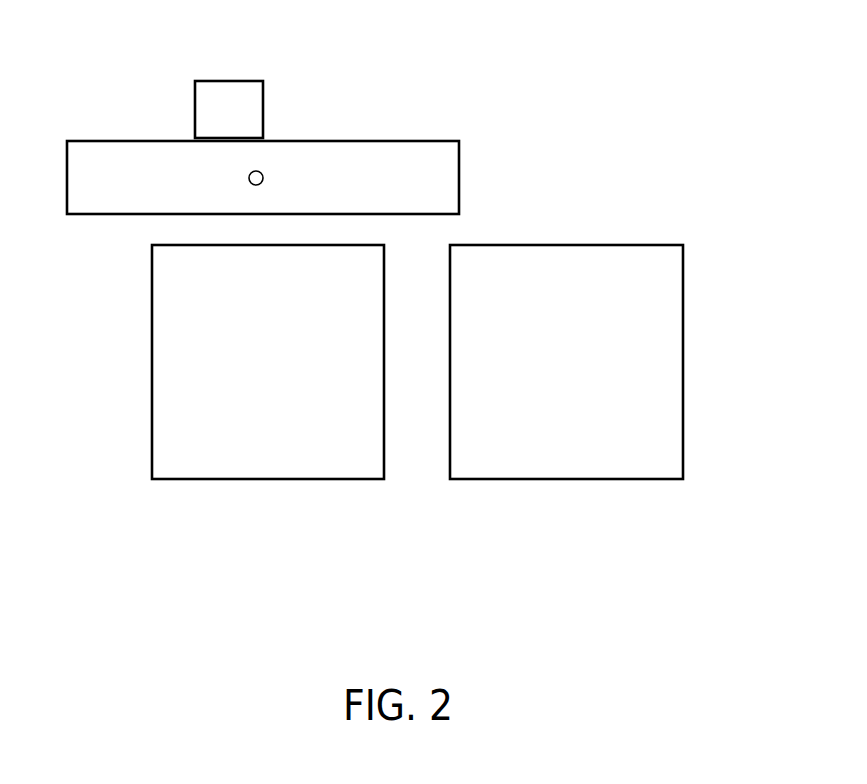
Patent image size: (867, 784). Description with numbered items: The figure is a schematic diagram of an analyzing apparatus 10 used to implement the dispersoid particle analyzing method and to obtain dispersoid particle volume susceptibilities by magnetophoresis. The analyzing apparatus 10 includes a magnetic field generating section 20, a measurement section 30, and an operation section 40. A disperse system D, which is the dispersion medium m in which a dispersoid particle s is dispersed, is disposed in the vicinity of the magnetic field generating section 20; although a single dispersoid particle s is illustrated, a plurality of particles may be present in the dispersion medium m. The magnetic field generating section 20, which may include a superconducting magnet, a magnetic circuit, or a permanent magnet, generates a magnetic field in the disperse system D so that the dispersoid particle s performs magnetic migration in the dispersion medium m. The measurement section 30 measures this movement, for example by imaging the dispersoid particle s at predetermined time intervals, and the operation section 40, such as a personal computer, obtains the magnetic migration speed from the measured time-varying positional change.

The analyzing apparatus 10 is at (404, 586).
The magnetic field generating section 20 is at (249, 81).
The measurement section 30 is at (152, 386).
The operation section 40 is at (683, 419).
The disperse system D is at (460, 158).
The dispersion medium m is at (392, 155).
The dispersoid particle s is at (249, 178).